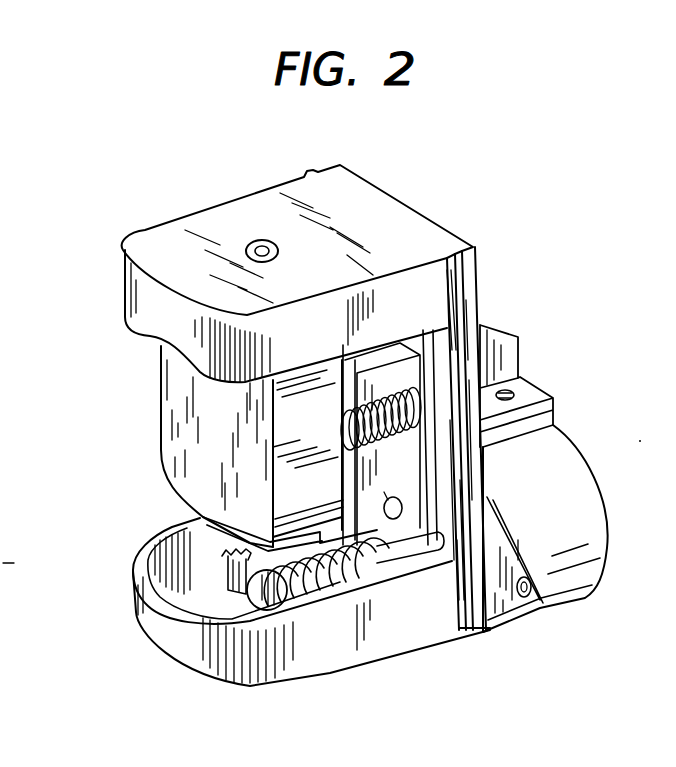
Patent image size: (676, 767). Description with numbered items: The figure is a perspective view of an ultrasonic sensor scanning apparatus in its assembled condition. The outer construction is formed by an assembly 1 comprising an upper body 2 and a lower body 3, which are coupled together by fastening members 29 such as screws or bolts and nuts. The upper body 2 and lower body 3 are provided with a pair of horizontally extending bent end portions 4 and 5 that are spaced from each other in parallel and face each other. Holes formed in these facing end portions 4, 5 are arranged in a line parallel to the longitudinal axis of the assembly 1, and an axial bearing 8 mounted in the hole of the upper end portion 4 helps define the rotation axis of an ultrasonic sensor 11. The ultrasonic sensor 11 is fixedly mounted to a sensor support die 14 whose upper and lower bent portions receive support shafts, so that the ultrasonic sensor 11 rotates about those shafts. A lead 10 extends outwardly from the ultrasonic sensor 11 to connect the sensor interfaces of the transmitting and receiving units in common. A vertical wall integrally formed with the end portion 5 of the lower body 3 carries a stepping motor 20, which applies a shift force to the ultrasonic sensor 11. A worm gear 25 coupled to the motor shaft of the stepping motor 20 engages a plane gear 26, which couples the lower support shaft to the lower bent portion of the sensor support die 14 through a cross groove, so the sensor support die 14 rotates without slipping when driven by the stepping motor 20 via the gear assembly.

The assembly 1 is at (157, 363).
The upper body 2 is at (443, 238).
The lower body 3 is at (407, 627).
The bent end portion 4 is at (284, 193).
The bent end portion 5 is at (208, 652).
The axial bearing 8 is at (247, 240).
The lead 10 is at (417, 368).
The ultrasonic sensor 11 is at (185, 440).
The sensor support die 14 is at (200, 518).
The stepping motor 20 is at (560, 598).
The worm gear 25 is at (318, 612).
The plane gear 26 is at (138, 571).
The fastening members 29 is at (514, 390).